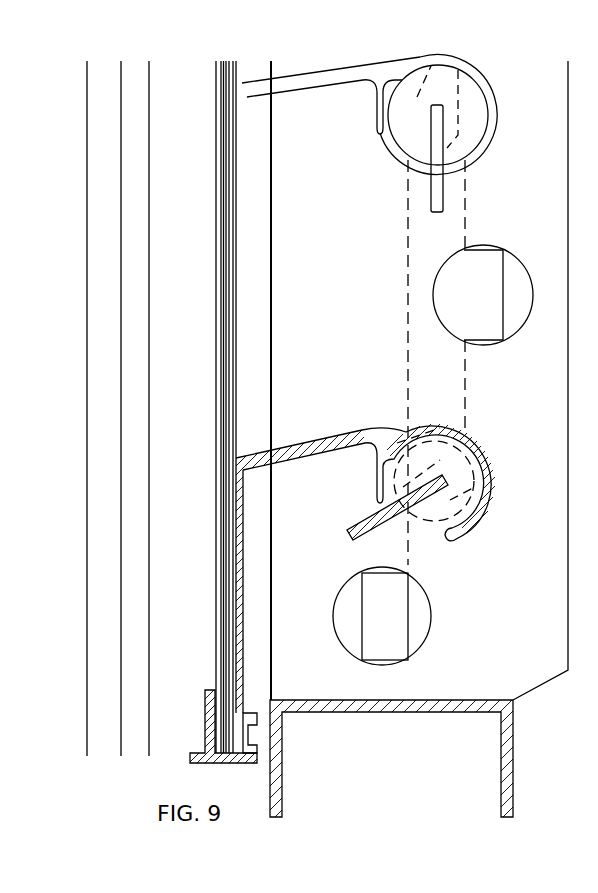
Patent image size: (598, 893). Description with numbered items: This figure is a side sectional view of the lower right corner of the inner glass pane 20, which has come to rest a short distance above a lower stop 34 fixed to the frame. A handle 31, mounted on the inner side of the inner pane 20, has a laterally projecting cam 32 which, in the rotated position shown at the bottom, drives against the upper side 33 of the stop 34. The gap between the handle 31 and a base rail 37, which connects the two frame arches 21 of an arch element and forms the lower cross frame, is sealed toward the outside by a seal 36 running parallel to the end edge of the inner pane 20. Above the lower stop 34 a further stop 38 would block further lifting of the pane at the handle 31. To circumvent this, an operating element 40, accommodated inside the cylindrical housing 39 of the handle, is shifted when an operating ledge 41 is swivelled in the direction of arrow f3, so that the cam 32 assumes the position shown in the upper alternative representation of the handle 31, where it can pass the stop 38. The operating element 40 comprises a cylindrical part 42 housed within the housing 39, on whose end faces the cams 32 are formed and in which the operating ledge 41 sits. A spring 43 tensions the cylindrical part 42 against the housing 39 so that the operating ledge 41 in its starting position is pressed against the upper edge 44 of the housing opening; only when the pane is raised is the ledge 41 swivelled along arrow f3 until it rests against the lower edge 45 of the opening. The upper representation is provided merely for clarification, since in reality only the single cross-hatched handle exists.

The inner glass pane 20 is at (222, 363).
The frame arches 21 is at (567, 421).
The handle 31 is at (312, 78).
The cam 32 is at (460, 110).
The upper side of the stop 33 is at (368, 567).
The lower stop 34 is at (422, 621).
The seal 36 is at (255, 730).
The base rail 37 is at (515, 752).
The further stop 38 is at (503, 267).
The cylindrical housing 39 is at (488, 477).
The operating element 40 is at (403, 519).
The operating ledge 41 is at (445, 197).
The cylindrical part 42 is at (448, 450).
The spring 43 is at (412, 472).
The upper edge of the opening 44 is at (382, 500).
The lower edge of the opening 45 is at (435, 528).
The arrow f3 is at (341, 522).